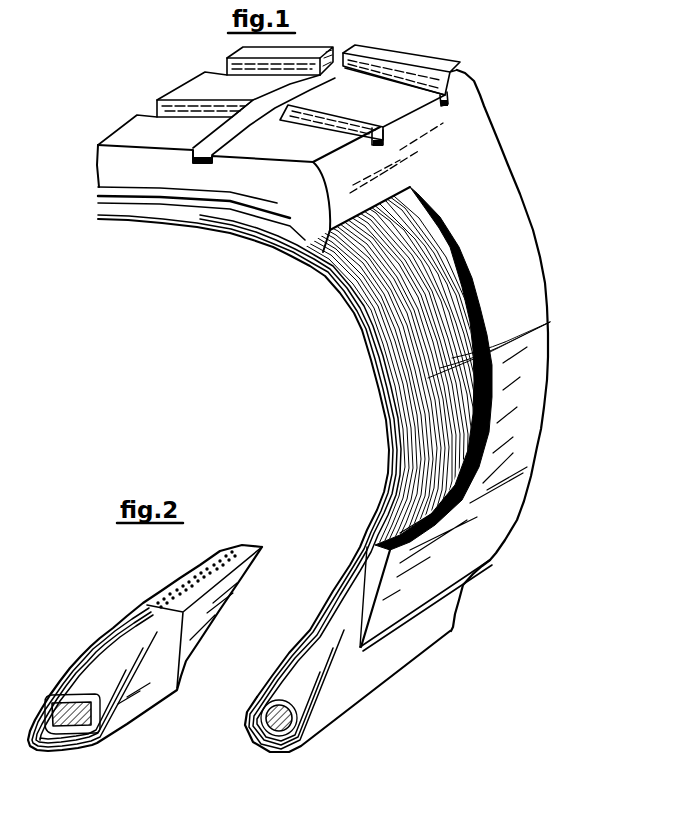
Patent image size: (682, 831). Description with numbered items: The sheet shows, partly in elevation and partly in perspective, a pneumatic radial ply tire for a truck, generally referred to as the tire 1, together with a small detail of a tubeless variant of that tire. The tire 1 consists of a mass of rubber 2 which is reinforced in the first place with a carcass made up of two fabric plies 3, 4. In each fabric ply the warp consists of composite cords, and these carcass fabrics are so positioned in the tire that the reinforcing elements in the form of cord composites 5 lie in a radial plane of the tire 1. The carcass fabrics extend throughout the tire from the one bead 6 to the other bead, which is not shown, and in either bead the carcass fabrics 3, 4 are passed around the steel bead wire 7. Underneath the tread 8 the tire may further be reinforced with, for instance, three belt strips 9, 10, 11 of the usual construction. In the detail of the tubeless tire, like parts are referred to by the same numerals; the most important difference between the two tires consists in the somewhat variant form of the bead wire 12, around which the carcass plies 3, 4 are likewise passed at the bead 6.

In FIG. 1, the tire 1 is at (509, 121).
In FIG. 1, the mass of rubber 2 is at (440, 218).
In FIG. 1, the fabric ply 3 is at (259, 242).
In FIG. 2, the fabric ply 3 is at (92, 658).
In FIG. 1, the fabric ply 4 is at (292, 252).
In FIG. 2, the fabric ply 4 is at (118, 646).
In FIG. 1, the cord composites 5 is at (497, 344).
In FIG. 2, the cord composites 5 is at (202, 566).
In FIG. 1, the bead 6 is at (252, 746).
In FIG. 2, the bead 6 is at (37, 739).
In FIG. 1, the steel bead wire 7 is at (280, 731).
In FIG. 1, the tread 8 is at (198, 90).
In FIG. 1, the belt strip 9 is at (100, 200).
In FIG. 1, the belt strip 10 is at (112, 195).
In FIG. 1, the belt strip 11 is at (118, 186).
In FIG. 2, the bead wire 12 is at (70, 722).